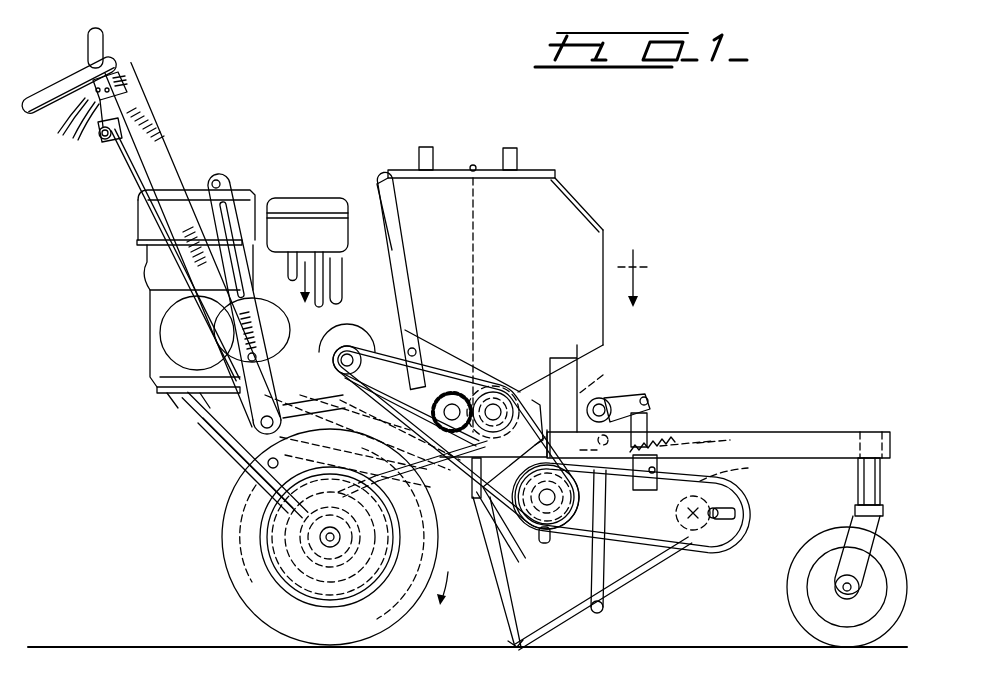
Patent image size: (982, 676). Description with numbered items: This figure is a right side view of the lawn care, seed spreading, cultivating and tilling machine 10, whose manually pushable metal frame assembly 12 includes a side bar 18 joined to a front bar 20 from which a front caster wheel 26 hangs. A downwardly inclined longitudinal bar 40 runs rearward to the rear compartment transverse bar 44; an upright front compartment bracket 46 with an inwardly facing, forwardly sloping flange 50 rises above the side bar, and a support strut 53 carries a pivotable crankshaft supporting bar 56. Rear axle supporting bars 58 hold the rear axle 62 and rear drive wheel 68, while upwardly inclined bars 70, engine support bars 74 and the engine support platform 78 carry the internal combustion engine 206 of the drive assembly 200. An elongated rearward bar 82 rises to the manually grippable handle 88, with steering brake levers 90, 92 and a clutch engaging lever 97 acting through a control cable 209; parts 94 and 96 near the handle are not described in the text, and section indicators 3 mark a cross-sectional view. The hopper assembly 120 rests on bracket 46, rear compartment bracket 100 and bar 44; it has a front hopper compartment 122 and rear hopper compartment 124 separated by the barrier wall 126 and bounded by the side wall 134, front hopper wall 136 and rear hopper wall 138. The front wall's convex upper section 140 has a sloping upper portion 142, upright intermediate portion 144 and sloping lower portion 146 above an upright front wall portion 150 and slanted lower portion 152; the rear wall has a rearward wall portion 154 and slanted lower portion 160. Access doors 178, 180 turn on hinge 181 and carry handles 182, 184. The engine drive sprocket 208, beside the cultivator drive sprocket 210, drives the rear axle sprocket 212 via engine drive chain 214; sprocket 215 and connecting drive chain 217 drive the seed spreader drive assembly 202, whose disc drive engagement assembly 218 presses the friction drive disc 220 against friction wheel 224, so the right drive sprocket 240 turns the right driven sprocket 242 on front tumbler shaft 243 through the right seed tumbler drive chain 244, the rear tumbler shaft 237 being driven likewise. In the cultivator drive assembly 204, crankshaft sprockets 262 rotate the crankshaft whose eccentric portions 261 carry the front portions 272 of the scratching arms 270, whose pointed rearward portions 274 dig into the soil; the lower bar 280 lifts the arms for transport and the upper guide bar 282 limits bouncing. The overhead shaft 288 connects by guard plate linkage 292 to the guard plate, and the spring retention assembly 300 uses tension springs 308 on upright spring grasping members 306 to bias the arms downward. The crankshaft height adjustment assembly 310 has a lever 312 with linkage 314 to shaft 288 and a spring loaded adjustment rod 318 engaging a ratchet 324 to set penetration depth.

The section line 3- 3 is at (475, 294).
The lawn care, seed spreading, cultivating, and tilling machine 10 is at (752, 383).
The frame assembly 12 is at (802, 438).
The longitudinal side bar 18 is at (805, 468).
The front bar 20 is at (893, 447).
The front caster wheel 26 is at (790, 615).
The downwardly inclined longitudinal bar 40 is at (490, 515).
The rear compartment transverse bar 44 is at (485, 525).
The front compartment bracket 46 is at (600, 398).
The flange 50 is at (555, 378).
The support strut 53 is at (533, 427).
The pivotable crankshaft supporting bar 56 is at (648, 558).
The rear axle supporting bar 58 is at (440, 505).
The rear axle 62 is at (320, 535).
The rear drive wheel 68 is at (238, 607).
The upwardly inclined bar 70 is at (400, 400).
The engine support bar 74 is at (213, 428).
The engine support platform 78 is at (172, 396).
The elongated rearward bar 82 is at (172, 152).
The manually grippable handle 88 is at (42, 86).
The lever 90 is at (62, 130).
The lever 92 is at (100, 138).
The control bracket 94 is at (125, 75).
The cable clamp 96 is at (130, 92).
The clutch engaging lever 97 is at (103, 45).
The rear compartment bracket 100 is at (377, 188).
The hopper assembly 120 is at (618, 217).
The front hopper compartment 122 is at (580, 205).
The rear hopper compartment 124 is at (445, 190).
The intermediate transverse barrier wall 126 is at (476, 252).
The side wall 134 is at (404, 252).
The front hopper wall 136 is at (598, 345).
The rear hopper wall 138 is at (395, 284).
The enlarged convex upper section 140 is at (568, 185).
The sloping upper portion 142 is at (583, 207).
The upright intermediate portion 144 is at (605, 262).
The sloping lower portion 146 is at (605, 350).
The upright front wall portion 150 is at (545, 448).
The slanted lower portion 152 is at (540, 472).
The rearward wall portion 154 is at (394, 236).
The slanted lower portion 160 is at (478, 480).
The top front access door 178 is at (532, 172).
The top rear access door 180 is at (400, 170).
The hinge 181 is at (475, 167).
The door handle 182 is at (510, 148).
The door handle 184 is at (426, 147).
The drive assembly 200 is at (150, 212).
The seed spreader drive assembly 202 is at (488, 382).
The cultivator drive assembly 204 is at (729, 553).
The internal combustion engine 206 is at (148, 265).
The engine drive sprocket 208 is at (230, 335).
The control cable 209 is at (143, 192).
The cultivator drive sprocket 210 is at (283, 428).
The rear axle sprocket 212 is at (398, 616).
The engine drive chain 214 is at (256, 514).
The sprocket 215 is at (410, 545).
The connecting drive chain 217 is at (345, 603).
The disc drive engagement assembly 218 is at (425, 520).
The friction drive disc 220 is at (345, 482).
The right friction wheel 224 is at (342, 330).
The rear tumbler shaft 237 is at (452, 390).
The right drive sprocket 240 is at (352, 350).
The right driven sprocket 242 is at (496, 385).
The front tumbler shaft 243 is at (505, 400).
The right seed tumbler drive chain 244 is at (418, 335).
The eccentric offset scratching arm-engaging portion 261 is at (722, 478).
The crankshaft sprocket 262 is at (745, 513).
The scratching arm 270 is at (560, 625).
The crankshaft engaging front portion 272 is at (682, 510).
The pointed soil-scratching rearward portion 274 is at (517, 645).
The lower transverse lateral bar 280 is at (605, 606).
The upper transverse lateral guide bar 282 is at (545, 540).
The overhead transverse shaft 288 is at (630, 395).
The guard plate linkage 292 is at (650, 404).
The spring retention and biasing assembly 300 is at (692, 436).
The upright spring grasping member 306 is at (698, 447).
The tension spring 308 is at (640, 440).
The crankshaft height adjustment assembly 310 is at (250, 207).
The manually operable lever 312 is at (235, 185).
The lever linkage 314 is at (285, 490).
The spring loaded adjustment rod 318 is at (150, 292).
The ratchet 324 is at (215, 455).